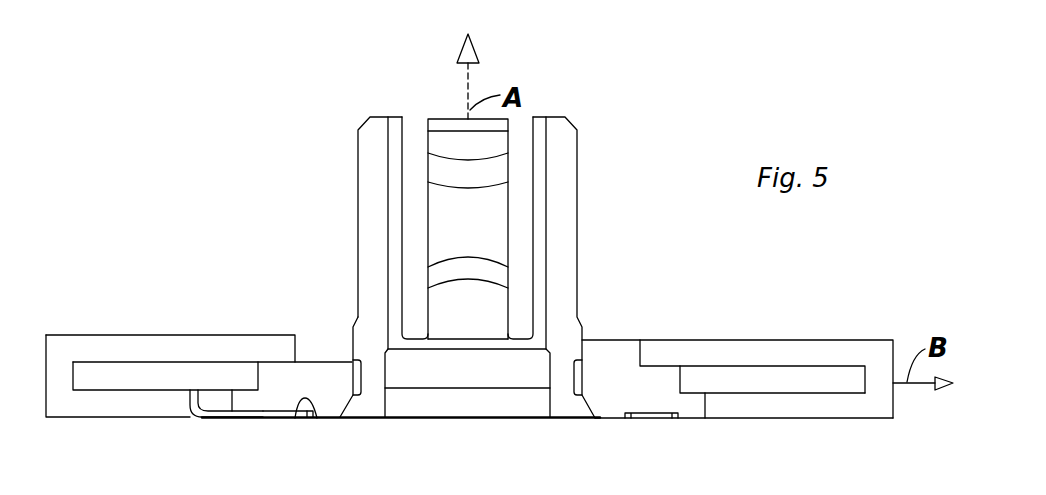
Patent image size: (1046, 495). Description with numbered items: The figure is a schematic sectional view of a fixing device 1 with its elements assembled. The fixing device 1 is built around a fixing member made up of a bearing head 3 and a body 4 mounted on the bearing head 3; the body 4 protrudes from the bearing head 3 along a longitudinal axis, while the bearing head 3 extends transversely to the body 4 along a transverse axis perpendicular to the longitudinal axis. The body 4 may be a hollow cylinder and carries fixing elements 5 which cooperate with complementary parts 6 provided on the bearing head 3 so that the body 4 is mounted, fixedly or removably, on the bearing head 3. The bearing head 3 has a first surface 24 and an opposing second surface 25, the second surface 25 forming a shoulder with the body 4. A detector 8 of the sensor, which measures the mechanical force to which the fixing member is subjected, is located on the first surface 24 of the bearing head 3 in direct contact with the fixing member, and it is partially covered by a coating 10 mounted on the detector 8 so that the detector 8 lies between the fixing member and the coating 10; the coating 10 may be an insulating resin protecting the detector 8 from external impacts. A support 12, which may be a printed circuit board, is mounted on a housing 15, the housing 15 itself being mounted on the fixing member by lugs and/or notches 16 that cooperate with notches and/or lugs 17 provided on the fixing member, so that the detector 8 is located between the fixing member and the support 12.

The fixing device 1 is at (620, 160).
The bearing head 3 is at (312, 358).
The body 4 is at (373, 170).
The fixing elements 5 is at (353, 405).
The complementary parts 6 is at (588, 400).
The detector 8 is at (275, 418).
The coating 10 is at (238, 418).
The support 12 is at (117, 378).
The housing 15 is at (95, 400).
The lugs and/or notches 16 is at (648, 355).
The notches and/or lugs 17 is at (663, 382).
The first surface 24 is at (317, 418).
The second surface 25 is at (352, 325).